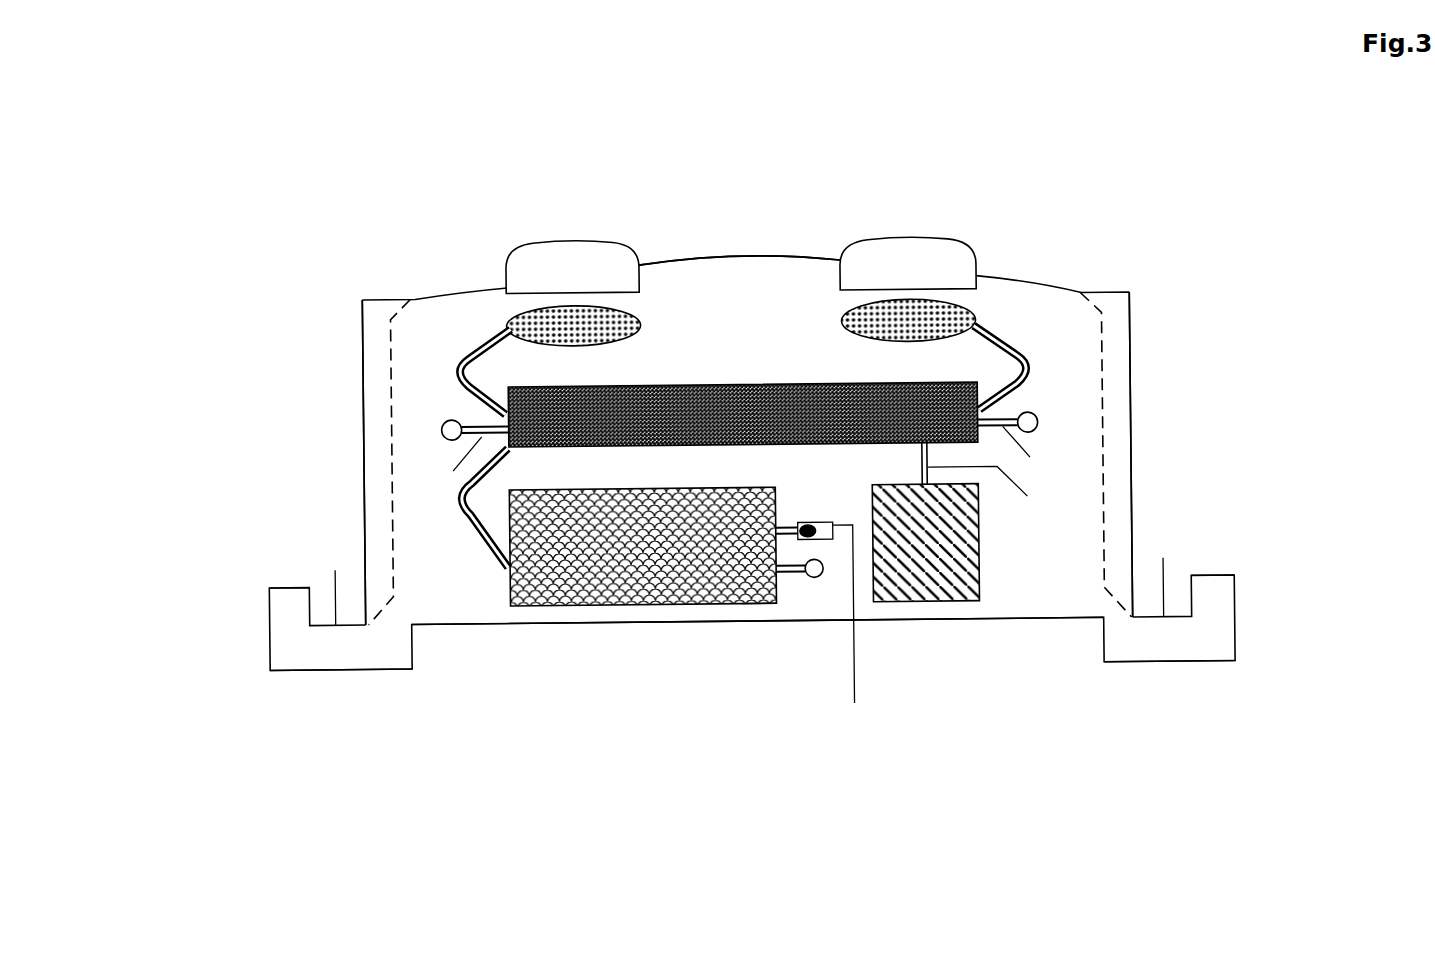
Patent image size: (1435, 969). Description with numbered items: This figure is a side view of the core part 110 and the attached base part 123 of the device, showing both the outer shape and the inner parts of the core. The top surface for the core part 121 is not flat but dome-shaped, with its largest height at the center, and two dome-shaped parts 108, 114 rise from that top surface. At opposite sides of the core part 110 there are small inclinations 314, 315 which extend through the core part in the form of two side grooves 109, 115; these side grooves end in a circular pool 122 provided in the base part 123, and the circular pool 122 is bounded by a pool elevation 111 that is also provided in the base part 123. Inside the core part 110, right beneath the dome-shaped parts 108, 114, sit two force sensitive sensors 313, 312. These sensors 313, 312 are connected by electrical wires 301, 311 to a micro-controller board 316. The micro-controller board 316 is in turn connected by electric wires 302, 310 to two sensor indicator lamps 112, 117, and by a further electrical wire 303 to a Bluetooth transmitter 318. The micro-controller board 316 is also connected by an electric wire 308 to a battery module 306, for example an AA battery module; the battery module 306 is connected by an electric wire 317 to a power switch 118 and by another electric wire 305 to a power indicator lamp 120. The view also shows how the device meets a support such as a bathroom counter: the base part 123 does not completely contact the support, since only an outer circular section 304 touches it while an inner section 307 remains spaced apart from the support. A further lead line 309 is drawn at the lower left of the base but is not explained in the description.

The dome-shaped part 108 is at (870, 242).
The side groove 109 is at (1120, 354).
The core part 110 is at (318, 443).
The pool elevation 111 is at (288, 603).
The sensor indicator lamp 112 is at (1038, 421).
The dome-shaped part 114 is at (572, 240).
The side groove 115 is at (388, 365).
The sensor indicator lamp 117 is at (442, 424).
The power switch 118 is at (854, 630).
The power indicator lamp 120 is at (813, 578).
The top surface for the core part 121 is at (778, 257).
The circular pool 122 is at (334, 570).
The base part 123 is at (245, 662).
The electrical wire 301 is at (990, 327).
The electric wire 302 is at (1030, 458).
The electrical wire 303 is at (1027, 497).
The outer circular section 304 is at (1207, 692).
The electric wire 305 is at (792, 571).
The battery module 306 is at (657, 605).
The inner section 307 is at (570, 624).
The electric wire 308 is at (493, 563).
The left bottom lead 309 is at (298, 703).
The electric wire 310 is at (453, 471).
The electrical wire 311 is at (487, 340).
The force sensitive sensor 312 is at (558, 315).
The force sensitive sensor 313 is at (908, 302).
The inclination 314 is at (1102, 312).
The inclination 315 is at (399, 319).
The micro-controller board 316 is at (740, 385).
The electric wire 317 is at (757, 607).
The Bluetooth transmitter 318 is at (978, 533).